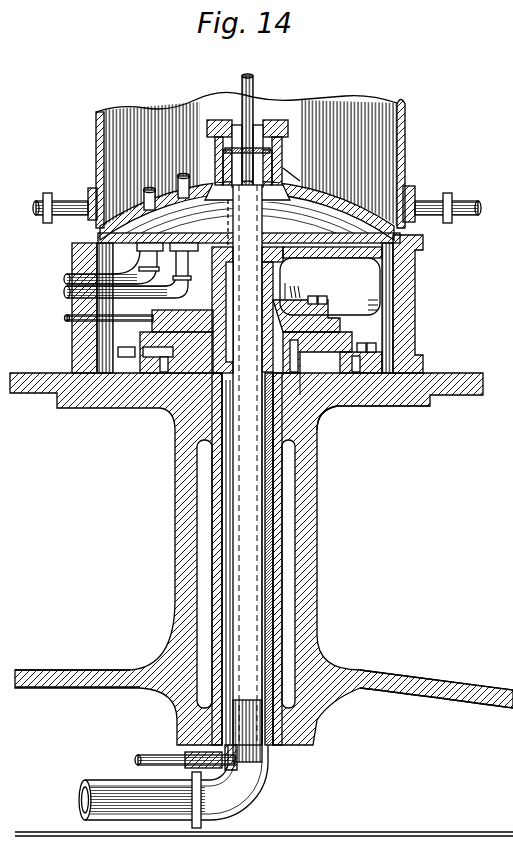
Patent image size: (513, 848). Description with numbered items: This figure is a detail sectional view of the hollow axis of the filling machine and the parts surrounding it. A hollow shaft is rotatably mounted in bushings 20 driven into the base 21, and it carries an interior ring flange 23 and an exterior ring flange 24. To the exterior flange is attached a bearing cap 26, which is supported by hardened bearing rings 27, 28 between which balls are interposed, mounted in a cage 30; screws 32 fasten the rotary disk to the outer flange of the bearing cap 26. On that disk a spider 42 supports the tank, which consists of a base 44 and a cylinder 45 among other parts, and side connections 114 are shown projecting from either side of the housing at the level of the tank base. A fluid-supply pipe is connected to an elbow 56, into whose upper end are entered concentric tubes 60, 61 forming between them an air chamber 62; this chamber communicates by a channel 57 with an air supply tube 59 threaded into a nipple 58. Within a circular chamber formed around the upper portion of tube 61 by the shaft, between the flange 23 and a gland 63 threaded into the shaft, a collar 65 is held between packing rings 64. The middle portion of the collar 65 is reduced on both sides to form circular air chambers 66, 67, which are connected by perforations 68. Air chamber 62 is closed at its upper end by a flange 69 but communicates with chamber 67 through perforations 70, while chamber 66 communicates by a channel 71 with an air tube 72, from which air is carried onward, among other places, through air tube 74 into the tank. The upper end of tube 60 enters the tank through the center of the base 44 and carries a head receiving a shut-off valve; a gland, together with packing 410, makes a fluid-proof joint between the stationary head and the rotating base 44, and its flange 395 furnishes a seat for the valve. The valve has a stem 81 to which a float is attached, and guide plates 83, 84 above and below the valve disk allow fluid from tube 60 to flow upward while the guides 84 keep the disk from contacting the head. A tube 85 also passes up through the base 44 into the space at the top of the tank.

The bushings 20 is at (290, 718).
The base 21 is at (305, 527).
The interior ring flange 23 is at (327, 413).
The exterior ring flange 24 is at (338, 306).
The bearing cap 26 is at (298, 347).
The bearing ring 27 is at (322, 352).
The bearing ring 28 is at (340, 408).
The cage 30 is at (334, 380).
The screws 32 is at (120, 352).
The spider 42 is at (418, 281).
The base 44 is at (343, 204).
The cylinder 45 is at (404, 139).
The elbow 56 is at (266, 782).
The channel 57 is at (269, 755).
The nipple 58 is at (207, 751).
The air supply tube 59 is at (140, 758).
The tube 60 is at (260, 576).
The tube 61 is at (270, 600).
The air chamber 62 is at (262, 622).
The gland 63 is at (283, 268).
The packing rings 64 is at (283, 285).
The collar 65 is at (230, 355).
The air chamber 66 is at (221, 303).
The air chamber 67 is at (247, 465).
The perforations 68 is at (229, 333).
The flange 69 is at (260, 240).
The perforations 70 is at (263, 322).
The channel 71 is at (139, 330).
The air tube 72 is at (67, 319).
The air tube 74 is at (143, 200).
The stem 81 is at (254, 108).
The guide plates 83 is at (246, 118).
The guide plates 84 is at (233, 197).
The tube 85 is at (178, 182).
The side pipe 114 is at (45, 218).
The flange 395 is at (286, 120).
The packing 410 is at (302, 178).